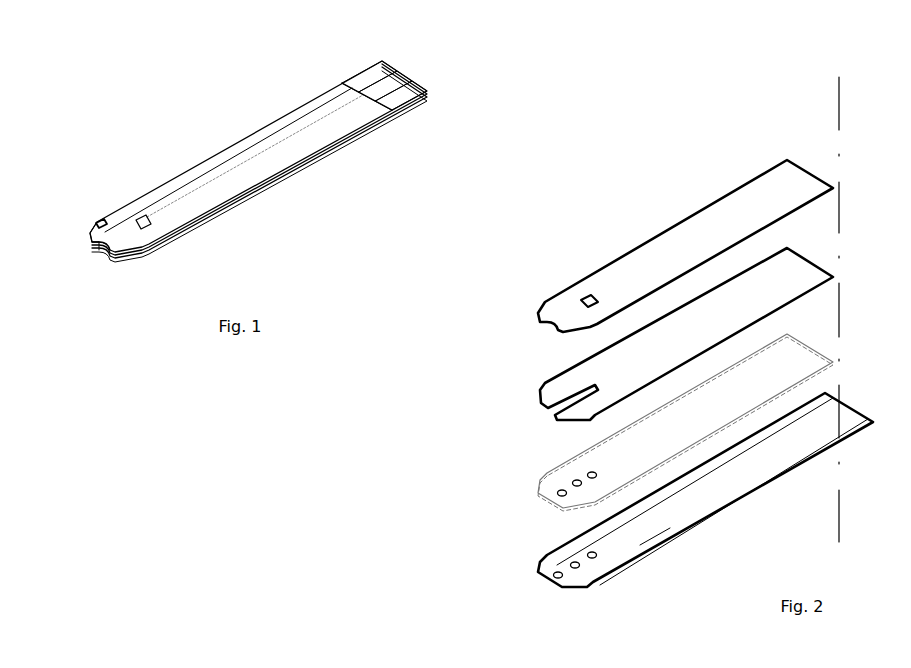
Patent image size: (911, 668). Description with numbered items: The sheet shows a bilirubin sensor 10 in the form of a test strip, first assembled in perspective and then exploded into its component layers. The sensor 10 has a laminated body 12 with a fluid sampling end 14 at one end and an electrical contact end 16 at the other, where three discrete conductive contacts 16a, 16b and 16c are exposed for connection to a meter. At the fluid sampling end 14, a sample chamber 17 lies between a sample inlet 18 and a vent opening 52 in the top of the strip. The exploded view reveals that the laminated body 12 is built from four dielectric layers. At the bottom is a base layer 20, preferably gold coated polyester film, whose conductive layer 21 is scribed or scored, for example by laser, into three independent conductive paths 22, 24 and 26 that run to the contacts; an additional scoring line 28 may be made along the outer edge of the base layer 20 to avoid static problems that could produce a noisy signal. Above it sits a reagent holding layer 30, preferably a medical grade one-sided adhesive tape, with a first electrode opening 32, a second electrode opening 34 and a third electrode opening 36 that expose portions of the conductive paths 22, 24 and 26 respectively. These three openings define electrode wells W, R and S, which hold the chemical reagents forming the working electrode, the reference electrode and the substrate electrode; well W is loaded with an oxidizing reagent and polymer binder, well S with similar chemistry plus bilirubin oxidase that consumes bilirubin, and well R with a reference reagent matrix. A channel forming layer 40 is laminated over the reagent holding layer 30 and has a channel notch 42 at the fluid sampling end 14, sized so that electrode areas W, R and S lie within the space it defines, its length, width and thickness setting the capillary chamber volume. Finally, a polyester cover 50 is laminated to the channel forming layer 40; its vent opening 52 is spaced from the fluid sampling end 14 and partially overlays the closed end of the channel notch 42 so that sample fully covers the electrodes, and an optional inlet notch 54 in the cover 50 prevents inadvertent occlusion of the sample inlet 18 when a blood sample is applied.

In FIG. 1, the bilirubin sensor 10 is at (158, 99).
In FIG. 1, the laminated body 12 is at (196, 167).
In FIG. 2, the laminated body 12 is at (460, 463).
In FIG. 1, the fluid sampling end 14 is at (83, 258).
In FIG. 1, the electrical contact end 16 is at (420, 70).
In FIG. 1, the conductive contact 16a is at (372, 77).
In FIG. 1, the conductive contact 16b is at (404, 98).
In FIG. 1, the conductive contact 16c is at (395, 83).
In FIG. 1, the sample chamber 17 is at (117, 235).
In FIG. 1, the sample inlet 18 is at (100, 251).
In FIG. 2, the base layer 20 is at (541, 562).
In FIG. 2, the conductive layer 21 is at (667, 527).
In FIG. 2, the first conductive path 22 is at (824, 403).
In FIG. 2, the second conductive path 24 is at (848, 427).
In FIG. 2, the third conductive path 26 is at (843, 413).
In FIG. 2, the scoring line 28 is at (720, 507).
In FIG. 2, the reagent holding layer 30 is at (538, 478).
In FIG. 2, the first electrode opening 32 is at (562, 490).
In FIG. 2, the second electrode opening 34 is at (577, 480).
In FIG. 2, the third electrode opening 36 is at (596, 474).
In FIG. 2, the channel forming layer 40 is at (538, 400).
In FIG. 2, the channel notch 42 is at (590, 391).
In FIG. 2, the cover 50 is at (555, 290).
In FIG. 1, the vent opening 52 is at (142, 219).
In FIG. 2, the vent opening 52 is at (593, 298).
In FIG. 1, the inlet notch 54 is at (107, 264).
In FIG. 2, the inlet notch 54 is at (547, 326).
In FIG. 2, the working electrode well W is at (552, 579).
In FIG. 2, the reference electrode well R is at (575, 577).
In FIG. 2, the substrate electrode well S is at (597, 562).